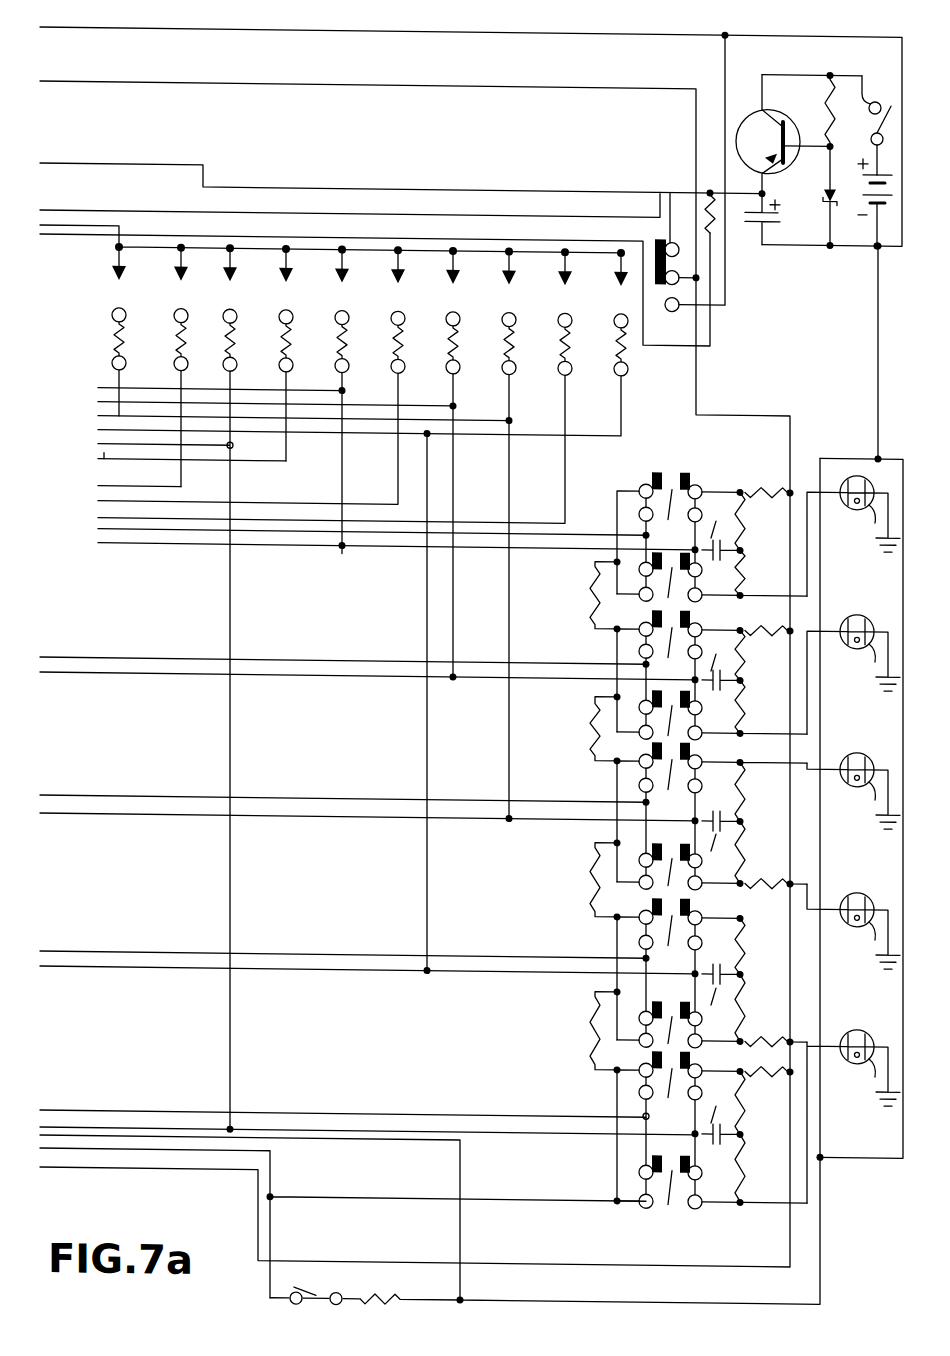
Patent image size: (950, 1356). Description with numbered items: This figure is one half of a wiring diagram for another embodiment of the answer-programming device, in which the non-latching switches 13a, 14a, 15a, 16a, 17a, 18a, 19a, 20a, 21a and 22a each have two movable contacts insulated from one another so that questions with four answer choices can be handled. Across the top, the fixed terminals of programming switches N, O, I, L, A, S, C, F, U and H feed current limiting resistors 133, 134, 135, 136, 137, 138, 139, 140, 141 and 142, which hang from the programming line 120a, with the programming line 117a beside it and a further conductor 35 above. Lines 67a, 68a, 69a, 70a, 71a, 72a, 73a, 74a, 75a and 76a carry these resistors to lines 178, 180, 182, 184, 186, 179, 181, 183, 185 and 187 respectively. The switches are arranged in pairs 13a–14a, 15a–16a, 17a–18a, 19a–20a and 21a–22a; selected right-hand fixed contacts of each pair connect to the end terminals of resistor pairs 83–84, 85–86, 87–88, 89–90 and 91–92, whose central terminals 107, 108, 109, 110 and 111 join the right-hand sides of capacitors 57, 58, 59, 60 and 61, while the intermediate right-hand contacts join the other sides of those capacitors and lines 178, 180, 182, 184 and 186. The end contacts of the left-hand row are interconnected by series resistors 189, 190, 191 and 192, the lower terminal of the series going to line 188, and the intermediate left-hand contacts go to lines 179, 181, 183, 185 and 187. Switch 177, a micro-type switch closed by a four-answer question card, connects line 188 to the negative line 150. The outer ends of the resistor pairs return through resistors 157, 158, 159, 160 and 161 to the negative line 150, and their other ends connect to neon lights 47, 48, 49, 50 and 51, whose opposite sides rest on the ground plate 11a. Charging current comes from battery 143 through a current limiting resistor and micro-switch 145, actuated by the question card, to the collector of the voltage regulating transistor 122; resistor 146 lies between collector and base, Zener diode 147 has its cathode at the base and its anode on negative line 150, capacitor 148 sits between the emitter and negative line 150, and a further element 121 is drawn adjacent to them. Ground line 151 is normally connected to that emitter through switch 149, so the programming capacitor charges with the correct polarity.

The negative line 150 is at (372, 28).
The ground line 151 is at (363, 83).
The conductor 35 is at (516, 185).
The conductor 117a is at (248, 246).
The bus conductor 120a is at (382, 246).
The switch 149 is at (650, 236).
The resistor 121 is at (698, 186).
The voltage regulating transistor 122 is at (747, 118).
The resistor 146 is at (827, 101).
The switch 145 is at (863, 112).
The battery 143 is at (868, 238).
The Zener diode 147 is at (822, 200).
The capacitor 148 is at (764, 236).
The current limiting resistor 133 is at (114, 338).
The current limiting resistor 134 is at (176, 338).
The current limiting resistor 135 is at (225, 338).
The current limiting resistor 136 is at (281, 338).
The current limiting resistor 137 is at (337, 338).
The current limiting resistor 138 is at (393, 338).
The current limiting resistor 139 is at (448, 338).
The current limiting resistor 140 is at (504, 338).
The current limiting resistor 141 is at (560, 338).
The current limiting resistor 142 is at (616, 338).
The line 71a is at (106, 387).
The line 70a is at (96, 401).
The line 69a is at (96, 415).
The line 68a is at (96, 429).
The line 67a is at (96, 443).
The line 75a is at (96, 458).
The line 76a is at (106, 459).
The line 74a is at (96, 485).
The line 73a is at (96, 500).
The line 72a is at (96, 517).
The line 187 is at (122, 528).
The line 186 is at (178, 542).
The line 185 is at (156, 656).
The line 184 is at (156, 674).
The line 183 is at (152, 792).
The line 182 is at (156, 821).
The line 181 is at (152, 951).
The line 180 is at (156, 974).
The line 179 is at (94, 1110).
The line 178 is at (152, 1110).
The line 188 is at (272, 1176).
The switch 177 is at (317, 1292).
The non-latching switch 22a is at (677, 534).
The non-latching switch 21a is at (678, 582).
The non-latching switch 20a is at (677, 672).
The non-latching switch 19a is at (678, 720).
The non-latching switch 18a is at (677, 813).
The non-latching switch 17a is at (678, 871).
The non-latching switch 16a is at (677, 970).
The non-latching switch 15a is at (678, 1028).
The non-latching switch 14a is at (678, 1126).
The non-latching switch 13a is at (712, 1189).
The capacitor 61 is at (718, 517).
The capacitor 60 is at (718, 651).
The capacitor 59 is at (718, 848).
The capacitor 58 is at (718, 1000).
The capacitor 57 is at (718, 1103).
The resistor 92 is at (748, 516).
The resistor 91 is at (748, 574).
The central terminal 111 is at (748, 545).
The resistor 161 is at (780, 478).
The resistor 90 is at (748, 644).
The resistor 89 is at (748, 705).
The central terminal 110 is at (748, 675).
The resistor 160 is at (780, 620).
The resistor 88 is at (748, 787).
The resistor 87 is at (748, 852).
The central terminal 109 is at (748, 815).
The resistor 159 is at (776, 881).
The resistor 86 is at (748, 937).
The resistor 85 is at (748, 992).
The central terminal 108 is at (748, 967).
The resistor 158 is at (760, 1032).
The resistor 84 is at (748, 1117).
The resistor 83 is at (748, 1177).
The central terminal 107 is at (746, 1130).
The resistor 157 is at (794, 1068).
The resistor 192 is at (592, 580).
The resistor 191 is at (587, 718).
The resistor 190 is at (587, 864).
The resistor 189 is at (587, 1018).
The ground plate 11a is at (861, 808).
The neon light 51 is at (853, 536).
The neon light 50 is at (853, 674).
The neon light 49 is at (853, 790).
The neon light 48 is at (853, 926).
The neon light 47 is at (853, 1116).